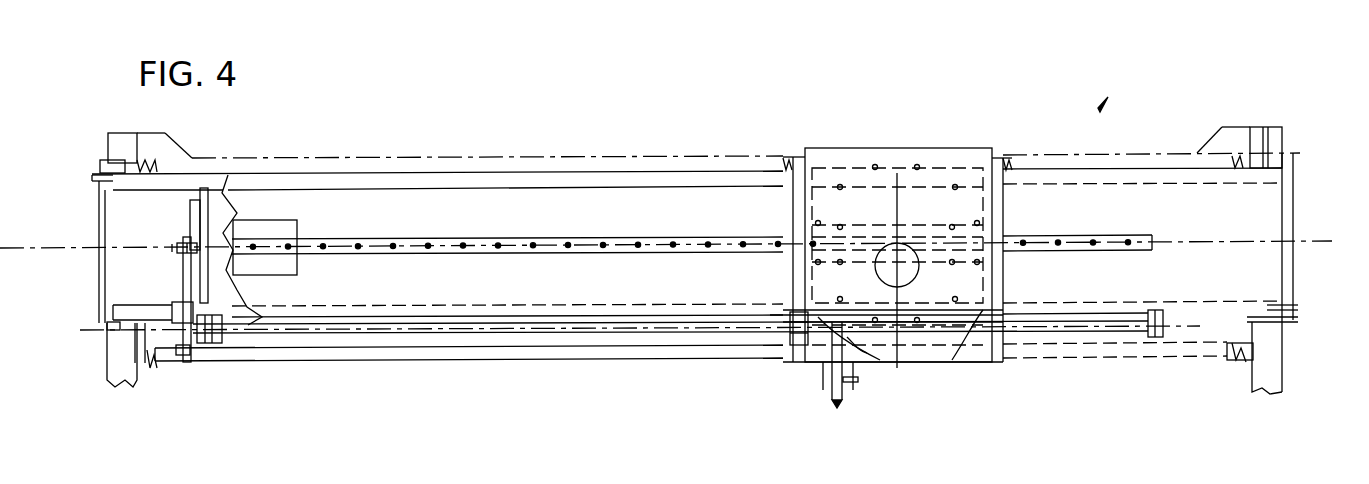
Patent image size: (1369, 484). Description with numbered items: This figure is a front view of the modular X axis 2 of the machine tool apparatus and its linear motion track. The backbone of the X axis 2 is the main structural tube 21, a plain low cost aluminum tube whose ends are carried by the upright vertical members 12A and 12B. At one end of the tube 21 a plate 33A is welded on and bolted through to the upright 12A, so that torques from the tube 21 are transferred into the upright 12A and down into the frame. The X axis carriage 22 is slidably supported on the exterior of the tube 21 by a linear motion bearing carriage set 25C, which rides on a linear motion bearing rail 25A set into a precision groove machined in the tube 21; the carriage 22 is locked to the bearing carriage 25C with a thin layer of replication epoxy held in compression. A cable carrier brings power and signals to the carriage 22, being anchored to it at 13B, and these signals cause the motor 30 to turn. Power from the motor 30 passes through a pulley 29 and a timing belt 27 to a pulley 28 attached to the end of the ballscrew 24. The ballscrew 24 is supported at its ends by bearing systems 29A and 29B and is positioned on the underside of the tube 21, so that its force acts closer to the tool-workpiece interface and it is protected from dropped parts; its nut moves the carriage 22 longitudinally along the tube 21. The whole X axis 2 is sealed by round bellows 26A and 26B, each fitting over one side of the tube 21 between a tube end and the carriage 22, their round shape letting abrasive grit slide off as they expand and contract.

The X axis 2 is at (1098, 108).
The vertical member 12A is at (118, 138).
The vertical member 12B is at (1268, 345).
The cable carrier anchor 13B is at (823, 392).
The main structural tube 21 is at (470, 172).
The X axis carriage 22 is at (955, 155).
The ballscrew 24 is at (535, 329).
The linear motion bearing rail 25A is at (585, 248).
The linear motion bearing carriage set 25C is at (965, 230).
The round bellows 26A is at (157, 365).
The round bellows 26B is at (1230, 160).
The timing belt 27 is at (185, 278).
The pulley 28 is at (180, 355).
The pulley 29 is at (170, 247).
The bearing system 29A is at (215, 337).
The bearing system 29B is at (1160, 340).
The motor 30 is at (205, 222).
The plate 33A is at (105, 328).